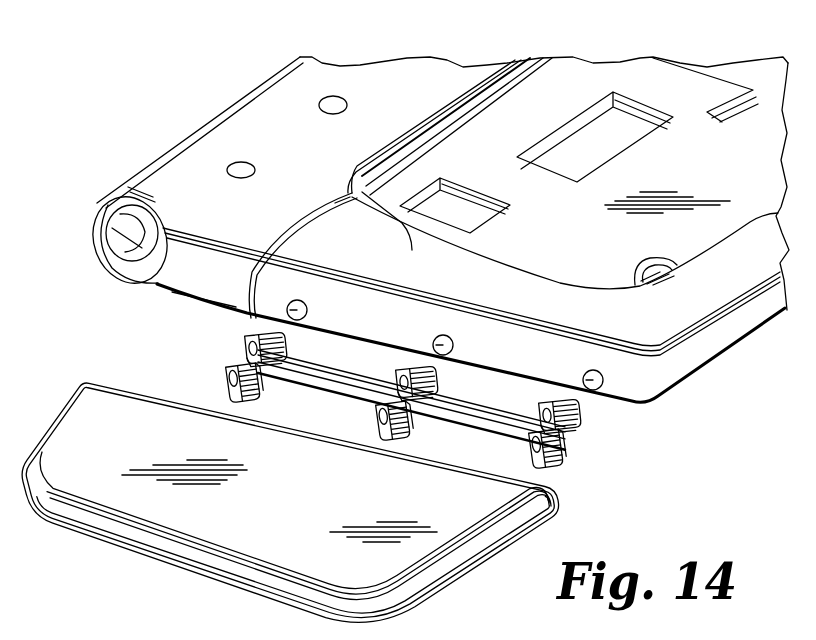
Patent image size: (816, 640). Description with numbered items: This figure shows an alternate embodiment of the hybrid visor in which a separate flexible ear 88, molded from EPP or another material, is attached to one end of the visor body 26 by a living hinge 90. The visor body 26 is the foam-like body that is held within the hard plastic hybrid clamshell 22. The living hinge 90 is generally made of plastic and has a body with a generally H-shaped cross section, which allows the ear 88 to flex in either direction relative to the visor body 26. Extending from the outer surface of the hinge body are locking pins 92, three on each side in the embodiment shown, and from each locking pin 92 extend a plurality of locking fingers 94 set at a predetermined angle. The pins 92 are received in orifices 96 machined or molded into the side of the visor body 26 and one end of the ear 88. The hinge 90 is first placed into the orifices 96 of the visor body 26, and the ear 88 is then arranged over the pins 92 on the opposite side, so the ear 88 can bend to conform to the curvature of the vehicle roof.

The hybrid clamshell 22 is at (400, 84).
The visor body 26 is at (352, 176).
The flexible ear 88 is at (170, 565).
The living hinge 90 is at (300, 385).
The locking pin 92 is at (238, 396).
The locking fingers 94 is at (228, 373).
The orifices 96 is at (288, 310).